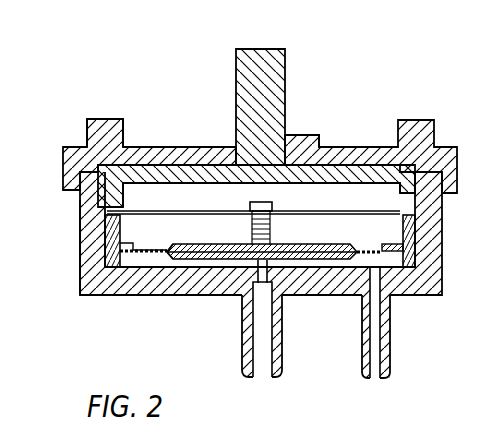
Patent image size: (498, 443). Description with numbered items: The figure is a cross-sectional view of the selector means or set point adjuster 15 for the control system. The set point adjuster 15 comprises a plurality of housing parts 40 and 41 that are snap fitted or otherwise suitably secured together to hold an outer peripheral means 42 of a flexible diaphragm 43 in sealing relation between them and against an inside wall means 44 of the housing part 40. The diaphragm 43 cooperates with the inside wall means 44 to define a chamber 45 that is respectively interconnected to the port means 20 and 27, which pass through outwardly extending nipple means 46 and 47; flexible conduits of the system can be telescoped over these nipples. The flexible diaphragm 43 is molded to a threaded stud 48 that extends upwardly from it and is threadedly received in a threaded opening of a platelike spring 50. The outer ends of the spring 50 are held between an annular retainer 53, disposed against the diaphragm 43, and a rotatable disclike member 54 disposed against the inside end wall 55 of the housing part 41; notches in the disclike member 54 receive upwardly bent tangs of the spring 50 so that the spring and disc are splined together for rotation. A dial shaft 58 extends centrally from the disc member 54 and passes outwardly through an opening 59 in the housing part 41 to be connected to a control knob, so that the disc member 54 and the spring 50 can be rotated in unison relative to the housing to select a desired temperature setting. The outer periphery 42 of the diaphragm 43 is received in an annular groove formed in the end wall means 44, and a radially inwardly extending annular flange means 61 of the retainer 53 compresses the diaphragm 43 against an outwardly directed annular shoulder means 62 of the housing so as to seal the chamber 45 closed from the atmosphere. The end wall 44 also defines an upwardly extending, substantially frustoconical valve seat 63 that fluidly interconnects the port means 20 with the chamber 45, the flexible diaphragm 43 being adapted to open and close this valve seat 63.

The set point adjuster 15 is at (110, 297).
The port means 20 is at (262, 350).
The port means 27 is at (378, 380).
The housing part 40 is at (80, 231).
The housing part 41 is at (352, 147).
The outer peripheral means 42 is at (83, 276).
The flexible diaphragm 43 is at (216, 243).
The inside wall means 44 is at (226, 265).
The chamber 45 is at (163, 260).
The nipple means 46 is at (271, 378).
The nipple means 47 is at (390, 380).
The threaded stud 48 is at (271, 230).
The platelike spring 50 is at (343, 210).
The annular retainer 53 is at (415, 232).
The rotatable disclike member 54 is at (147, 183).
The inside end wall 55 is at (181, 165).
The dial shaft 58 is at (270, 49).
The opening 59 is at (287, 135).
The annular flange means 61 is at (392, 243).
The annular shoulder means 62 is at (152, 262).
The valve seat 63 is at (270, 262).